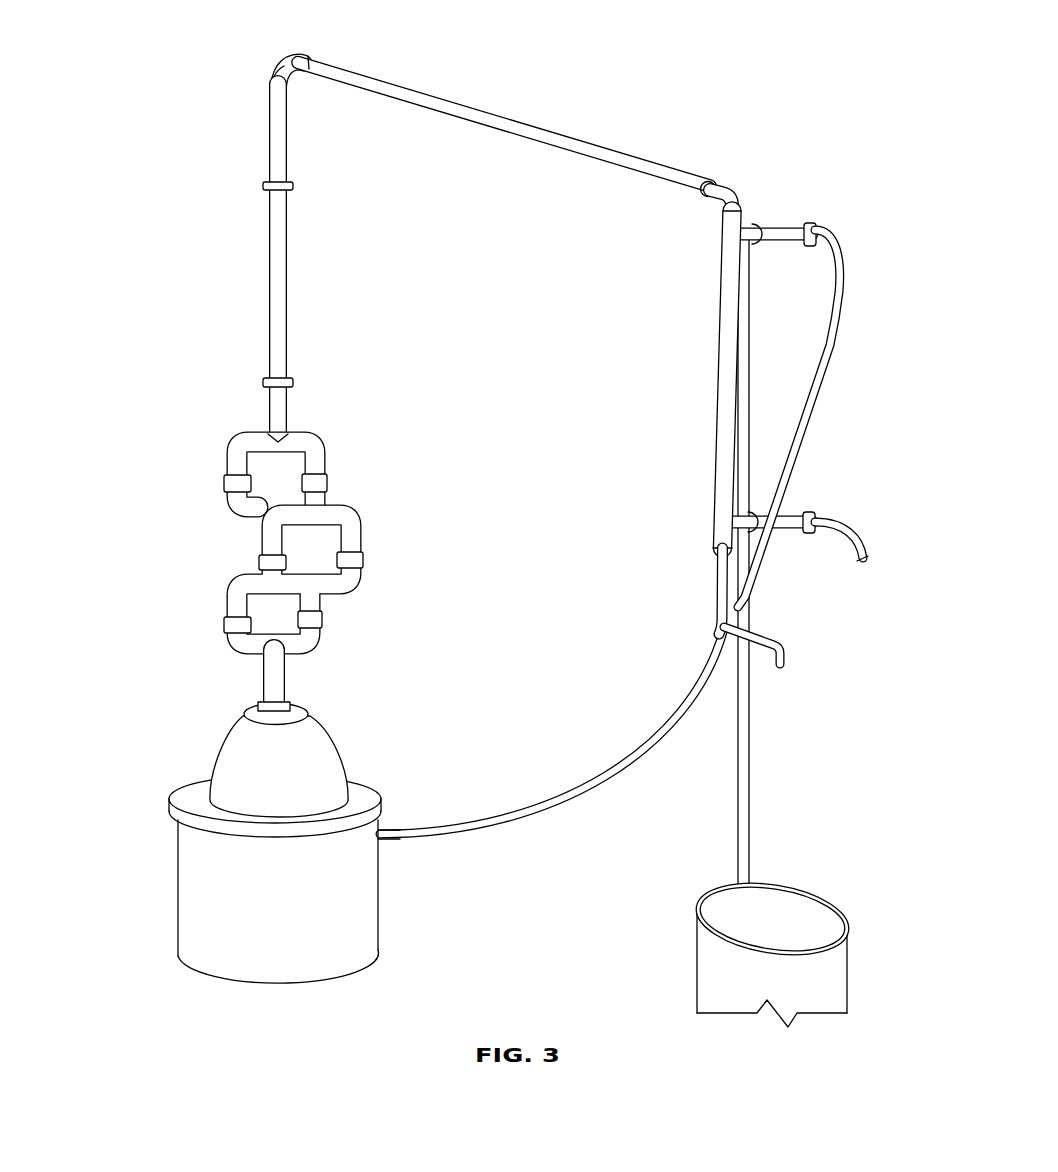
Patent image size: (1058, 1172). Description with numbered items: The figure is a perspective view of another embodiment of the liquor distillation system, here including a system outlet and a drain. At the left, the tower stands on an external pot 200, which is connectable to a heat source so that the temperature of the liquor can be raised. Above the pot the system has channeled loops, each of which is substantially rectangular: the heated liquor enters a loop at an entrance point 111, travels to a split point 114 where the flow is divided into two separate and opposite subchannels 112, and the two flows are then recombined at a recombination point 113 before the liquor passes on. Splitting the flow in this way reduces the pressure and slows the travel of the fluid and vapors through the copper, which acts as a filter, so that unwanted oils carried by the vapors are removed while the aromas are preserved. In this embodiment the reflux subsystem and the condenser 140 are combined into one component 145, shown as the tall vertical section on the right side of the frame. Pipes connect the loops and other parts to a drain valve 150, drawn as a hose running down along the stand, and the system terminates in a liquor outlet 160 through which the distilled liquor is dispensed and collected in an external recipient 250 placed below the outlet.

The entrance point 111 is at (290, 655).
The opposite subchannels 112 is at (310, 646).
The recombination point 113 is at (283, 437).
The split point 114 is at (297, 588).
The condenser 140 is at (560, 129).
The combined component 145 is at (280, 268).
The drain valve 150 is at (808, 423).
The liquor outlet 160 is at (778, 648).
The pot 200 is at (218, 882).
The external recipient 250 is at (798, 912).